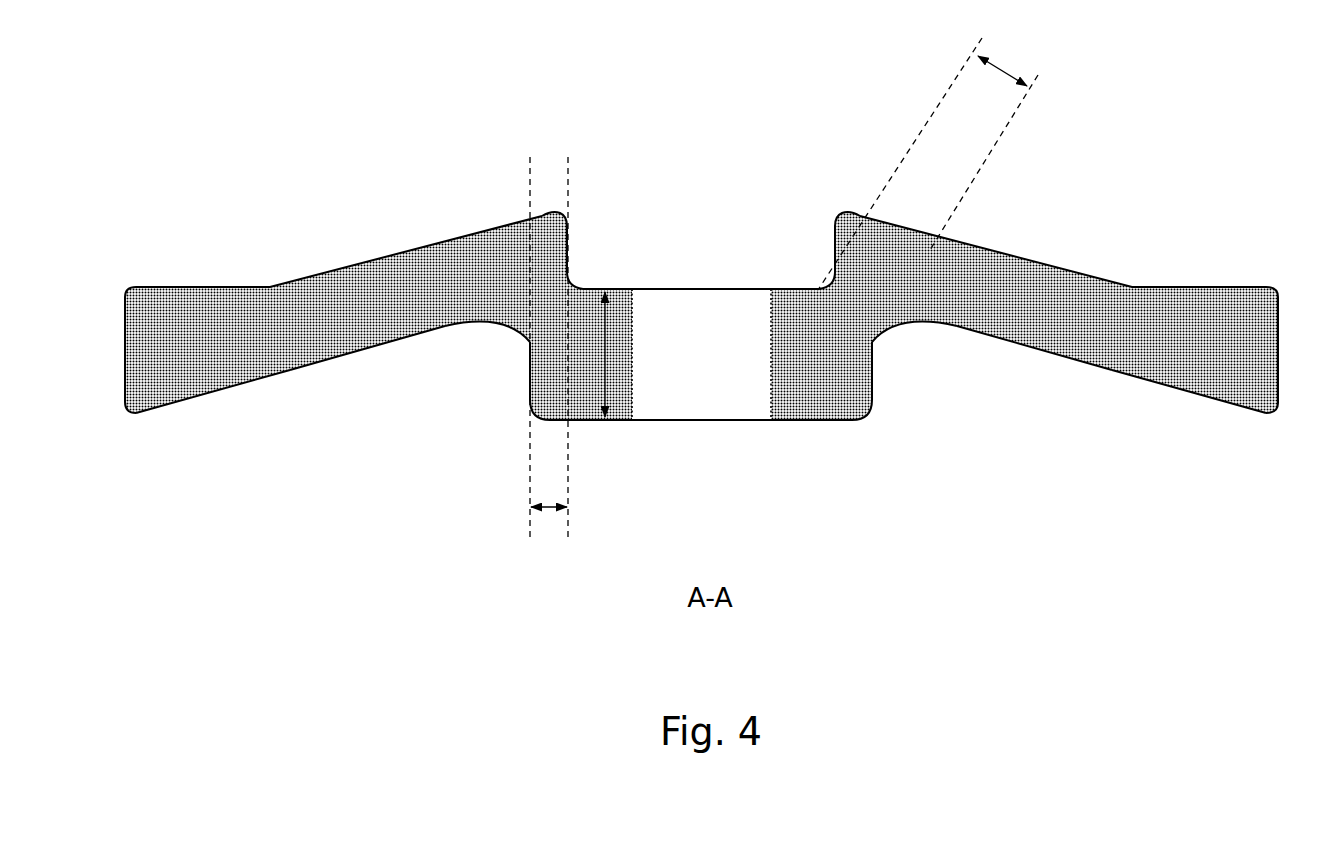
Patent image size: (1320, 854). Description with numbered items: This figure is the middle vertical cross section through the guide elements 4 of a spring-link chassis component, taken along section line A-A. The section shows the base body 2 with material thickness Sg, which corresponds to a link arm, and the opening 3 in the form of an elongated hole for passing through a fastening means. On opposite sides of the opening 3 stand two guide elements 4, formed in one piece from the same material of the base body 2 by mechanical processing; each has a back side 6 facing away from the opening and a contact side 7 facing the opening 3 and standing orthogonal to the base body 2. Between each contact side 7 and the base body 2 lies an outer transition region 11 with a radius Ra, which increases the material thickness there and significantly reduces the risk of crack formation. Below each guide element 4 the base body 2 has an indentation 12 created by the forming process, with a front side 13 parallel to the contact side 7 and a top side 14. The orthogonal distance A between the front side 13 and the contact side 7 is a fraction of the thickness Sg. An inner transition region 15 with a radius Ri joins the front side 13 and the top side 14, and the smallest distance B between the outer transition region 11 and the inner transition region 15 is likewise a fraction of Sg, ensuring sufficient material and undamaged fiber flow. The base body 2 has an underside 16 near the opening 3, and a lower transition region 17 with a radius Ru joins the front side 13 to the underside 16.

The base body 2 is at (1200, 353).
The opening 3 is at (700, 370).
The guide element 4 is at (328, 223).
The back side 6 is at (414, 253).
The contact side 7 is at (579, 251).
The outer transition region 11 is at (585, 288).
The indentation 12 is at (425, 392).
The front side 13 is at (522, 371).
The top side 14 is at (356, 360).
The inner transition region 15 is at (517, 318).
The underside 16 is at (726, 429).
The lower transition region 17 is at (867, 403).
The radius of outer transition region Ra is at (577, 278).
The radius of inner transition region Ri is at (518, 321).
The lower radius Ru is at (832, 380).
The material thickness Sg is at (617, 350).
The distance A is at (550, 517).
The distance B is at (928, 164).